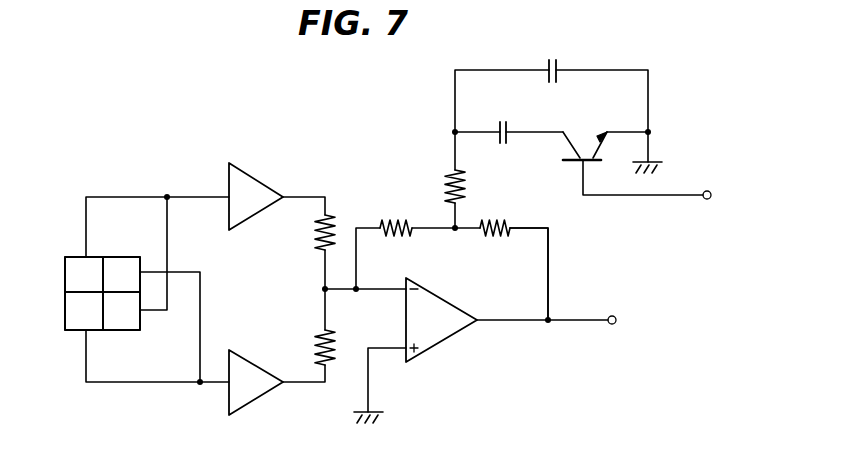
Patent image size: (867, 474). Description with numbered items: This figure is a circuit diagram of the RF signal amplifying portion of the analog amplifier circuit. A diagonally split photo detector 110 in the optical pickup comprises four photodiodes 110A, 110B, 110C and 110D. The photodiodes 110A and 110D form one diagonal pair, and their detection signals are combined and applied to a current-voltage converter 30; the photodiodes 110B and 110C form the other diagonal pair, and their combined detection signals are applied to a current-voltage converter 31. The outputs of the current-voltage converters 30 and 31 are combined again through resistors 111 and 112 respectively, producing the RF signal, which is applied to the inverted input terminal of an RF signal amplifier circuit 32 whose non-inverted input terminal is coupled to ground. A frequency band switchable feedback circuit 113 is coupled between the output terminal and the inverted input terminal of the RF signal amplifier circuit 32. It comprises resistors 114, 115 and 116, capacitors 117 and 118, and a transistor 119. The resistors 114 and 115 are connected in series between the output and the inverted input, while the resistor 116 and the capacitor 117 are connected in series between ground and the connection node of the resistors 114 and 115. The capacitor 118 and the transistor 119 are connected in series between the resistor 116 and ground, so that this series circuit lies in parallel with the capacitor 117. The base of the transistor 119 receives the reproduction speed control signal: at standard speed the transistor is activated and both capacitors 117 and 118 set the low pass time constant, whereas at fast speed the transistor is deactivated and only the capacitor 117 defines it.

The diagonally split photo detector 110 is at (65, 292).
The photodiode 110A is at (80, 262).
The photodiode 110B is at (120, 262).
The photodiode 110C is at (75, 326).
The photodiode 110D is at (120, 326).
The current-voltage converter 30 is at (262, 187).
The current-voltage converter 31 is at (262, 392).
The RF signal amplifier circuit 32 is at (465, 323).
The resistor 111 is at (318, 248).
The resistor 112 is at (318, 330).
The frequency band switchable feedback circuit 113 is at (555, 205).
The resistor 114 is at (400, 235).
The resistor 115 is at (493, 235).
The resistor 116 is at (449, 172).
The capacitor 117 is at (556, 62).
The capacitor 118 is at (506, 125).
The transistor 119 is at (583, 145).